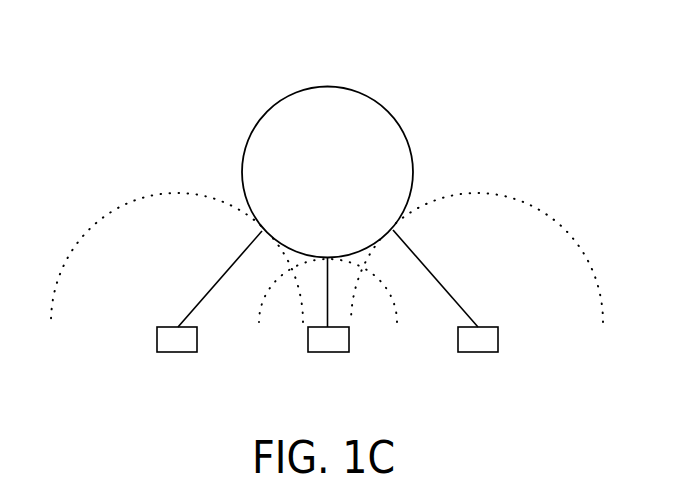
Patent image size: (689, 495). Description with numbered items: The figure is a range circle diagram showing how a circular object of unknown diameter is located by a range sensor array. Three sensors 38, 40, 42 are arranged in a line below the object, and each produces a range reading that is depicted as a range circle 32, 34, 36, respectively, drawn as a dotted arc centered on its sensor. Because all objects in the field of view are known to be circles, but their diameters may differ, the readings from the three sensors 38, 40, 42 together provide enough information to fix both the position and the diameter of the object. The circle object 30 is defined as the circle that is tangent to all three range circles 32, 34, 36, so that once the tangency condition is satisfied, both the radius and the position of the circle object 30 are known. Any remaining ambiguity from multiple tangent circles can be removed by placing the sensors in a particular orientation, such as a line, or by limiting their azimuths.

The circle object 30 is at (394, 121).
The range circle 32 is at (88, 231).
The range circle 34 is at (265, 298).
The range circle 36 is at (568, 231).
The sensor 38 is at (182, 352).
The sensor 40 is at (332, 352).
The sensor 42 is at (483, 352).